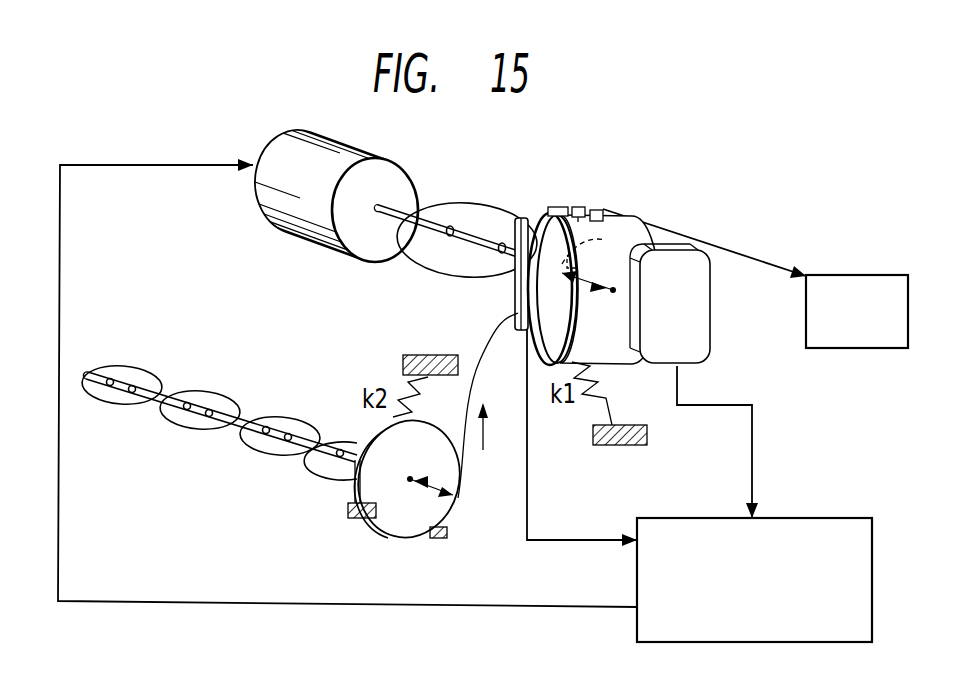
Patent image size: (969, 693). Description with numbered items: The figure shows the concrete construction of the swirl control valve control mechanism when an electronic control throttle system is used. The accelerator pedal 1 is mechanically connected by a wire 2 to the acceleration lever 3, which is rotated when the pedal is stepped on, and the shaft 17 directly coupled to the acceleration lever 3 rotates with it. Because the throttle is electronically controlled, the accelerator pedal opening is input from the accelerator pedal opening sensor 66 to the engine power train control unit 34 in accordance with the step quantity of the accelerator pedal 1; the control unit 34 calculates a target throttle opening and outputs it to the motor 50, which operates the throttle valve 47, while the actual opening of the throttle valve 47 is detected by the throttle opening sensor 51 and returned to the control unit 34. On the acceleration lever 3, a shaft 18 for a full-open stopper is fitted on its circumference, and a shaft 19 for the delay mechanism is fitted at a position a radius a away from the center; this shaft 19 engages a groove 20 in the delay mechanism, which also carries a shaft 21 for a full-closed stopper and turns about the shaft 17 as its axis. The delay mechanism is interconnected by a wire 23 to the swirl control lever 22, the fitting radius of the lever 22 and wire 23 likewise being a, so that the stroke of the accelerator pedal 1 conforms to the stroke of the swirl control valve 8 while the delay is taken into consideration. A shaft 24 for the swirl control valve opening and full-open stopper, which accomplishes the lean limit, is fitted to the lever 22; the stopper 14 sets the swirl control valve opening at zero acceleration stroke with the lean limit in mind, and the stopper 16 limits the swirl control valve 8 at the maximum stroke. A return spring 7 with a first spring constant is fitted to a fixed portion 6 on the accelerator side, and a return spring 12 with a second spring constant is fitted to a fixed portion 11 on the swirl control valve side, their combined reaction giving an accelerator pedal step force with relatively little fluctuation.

The accelerator pedal 1 is at (846, 349).
The wire 2 is at (750, 259).
The acceleration lever 3 is at (615, 356).
The fixed portion 6 is at (620, 447).
The return spring 7 is at (602, 404).
The swirl control valve 8 is at (172, 420).
The fixed portion 11 is at (418, 356).
The return spring 12 is at (405, 392).
The stopper 14 is at (350, 503).
The stopper 16 is at (445, 534).
The shaft 17 is at (430, 228).
The shaft for full-open stopper 18 is at (600, 210).
The shaft for delay mechanism 19 is at (526, 282).
The groove 20 is at (592, 246).
The shaft for full-closed stopper 21 is at (577, 207).
The swirl control lever 22 is at (388, 533).
The wire 23 is at (487, 367).
The shaft 24 is at (360, 518).
The engine power train control unit 34 is at (808, 518).
The throttle valve 47 is at (477, 210).
The motor 50 is at (375, 157).
The throttle opening sensor 51 is at (525, 218).
The accelerator pedal opening sensor 66 is at (705, 333).